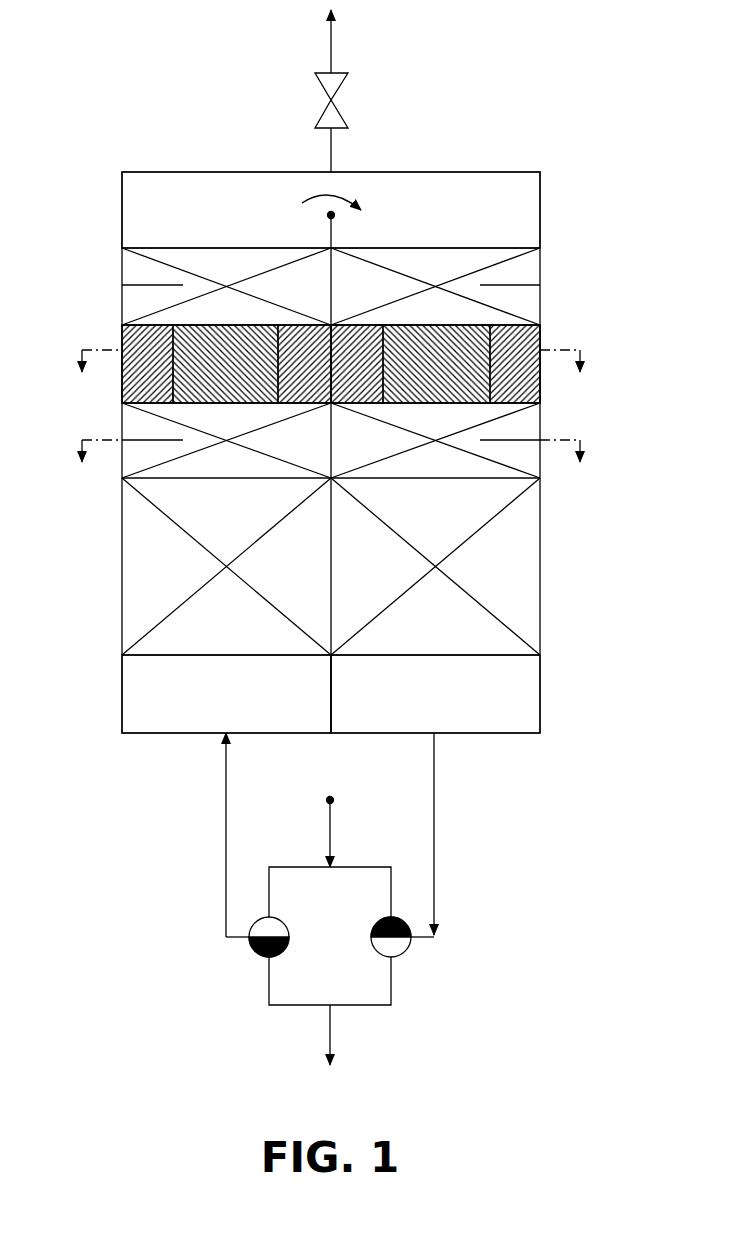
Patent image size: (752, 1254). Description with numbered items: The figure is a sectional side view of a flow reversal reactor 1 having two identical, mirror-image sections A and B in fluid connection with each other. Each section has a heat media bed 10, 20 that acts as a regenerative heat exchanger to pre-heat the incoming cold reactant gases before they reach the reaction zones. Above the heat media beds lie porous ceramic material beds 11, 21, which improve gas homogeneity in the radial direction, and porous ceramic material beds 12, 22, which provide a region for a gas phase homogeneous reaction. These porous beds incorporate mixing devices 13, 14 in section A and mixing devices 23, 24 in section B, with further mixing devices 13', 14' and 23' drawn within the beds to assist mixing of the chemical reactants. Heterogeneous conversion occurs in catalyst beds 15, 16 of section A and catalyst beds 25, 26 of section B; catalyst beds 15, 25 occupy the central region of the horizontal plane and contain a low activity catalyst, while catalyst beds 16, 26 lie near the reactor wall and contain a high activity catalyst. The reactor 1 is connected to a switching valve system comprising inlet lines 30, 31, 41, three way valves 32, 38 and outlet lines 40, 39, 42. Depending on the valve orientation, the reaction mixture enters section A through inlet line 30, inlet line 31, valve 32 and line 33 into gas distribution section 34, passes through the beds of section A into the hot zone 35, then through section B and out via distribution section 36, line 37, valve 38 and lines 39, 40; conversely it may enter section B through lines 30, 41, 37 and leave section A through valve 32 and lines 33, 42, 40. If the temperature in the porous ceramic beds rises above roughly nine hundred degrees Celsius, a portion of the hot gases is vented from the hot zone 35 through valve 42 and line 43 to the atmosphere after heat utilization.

The flow reversal reactor 1 is at (514, 128).
The heat media bed 10 is at (226, 566).
The porous ceramic material bed 11 is at (226, 440).
The porous ceramic material bed 12 is at (226, 286).
The mixing device 13 is at (152, 455).
The first lower collector inner 13' is at (287, 455).
The mixing device 14 is at (131, 302).
The first upper distributor inner 14' is at (287, 300).
The catalyst bed 15 is at (254, 336).
The catalyst bed 16 is at (144, 353).
The heat media bed 20 is at (435, 566).
The porous ceramic material bed 21 is at (435, 440).
The porous ceramic material bed 22 is at (435, 286).
The mixing device 23 is at (440, 455).
The second lower collector inner 23' is at (510, 455).
The mixing device 24 is at (340, 288).
The catalyst bed 25 is at (409, 336).
The catalyst bed 26 is at (527, 348).
The inlet line 30 is at (329, 817).
The inlet line 31 is at (299, 878).
The three way valve 32 is at (307, 875).
The line 33 is at (244, 835).
The gas distribution section 34 is at (226, 694).
The hot zone 35 is at (331, 210).
The distribution section 36 is at (435, 694).
The line 37 is at (441, 835).
The three way valve 38 is at (378, 925).
The outlet line 39 is at (353, 978).
The outlet line 40 is at (308, 1028).
The inlet line 41 is at (360, 878).
The valve 42 is at (340, 92).
The line 43 is at (331, 44).